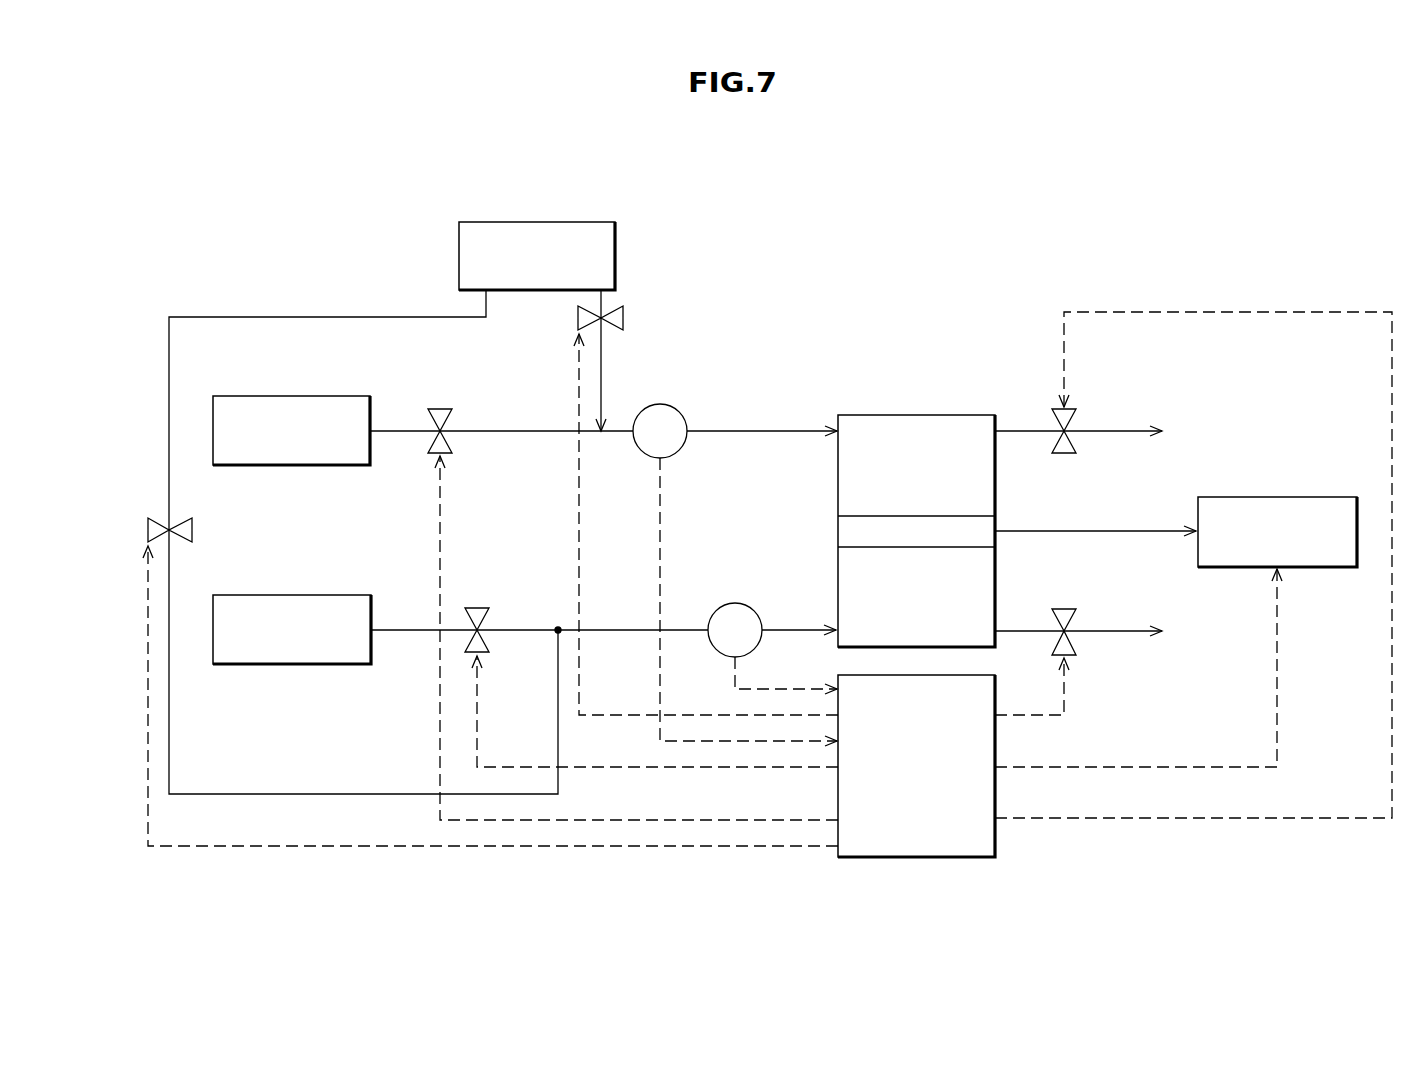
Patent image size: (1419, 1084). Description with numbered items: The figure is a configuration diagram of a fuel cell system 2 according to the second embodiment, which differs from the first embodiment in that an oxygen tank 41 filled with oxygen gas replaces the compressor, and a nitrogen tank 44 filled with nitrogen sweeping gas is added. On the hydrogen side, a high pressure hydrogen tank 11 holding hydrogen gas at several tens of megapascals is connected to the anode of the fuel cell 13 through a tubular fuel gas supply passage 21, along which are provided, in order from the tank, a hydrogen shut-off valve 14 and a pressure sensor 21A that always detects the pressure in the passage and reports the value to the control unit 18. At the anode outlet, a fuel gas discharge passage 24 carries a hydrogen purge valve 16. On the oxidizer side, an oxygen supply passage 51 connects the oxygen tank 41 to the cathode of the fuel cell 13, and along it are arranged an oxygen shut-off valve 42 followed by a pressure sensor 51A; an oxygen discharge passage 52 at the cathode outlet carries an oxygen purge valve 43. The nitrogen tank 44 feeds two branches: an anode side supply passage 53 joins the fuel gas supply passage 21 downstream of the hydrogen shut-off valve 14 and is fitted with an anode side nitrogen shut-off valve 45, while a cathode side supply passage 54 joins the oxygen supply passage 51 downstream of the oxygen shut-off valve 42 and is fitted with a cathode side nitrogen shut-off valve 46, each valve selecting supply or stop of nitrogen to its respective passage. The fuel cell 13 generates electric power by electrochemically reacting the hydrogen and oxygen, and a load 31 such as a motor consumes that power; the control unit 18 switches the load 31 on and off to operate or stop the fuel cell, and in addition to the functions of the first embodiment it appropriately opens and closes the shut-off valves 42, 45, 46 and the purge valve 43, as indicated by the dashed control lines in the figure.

The fuel cell system 2 is at (912, 303).
The high pressure hydrogen tank 11 is at (238, 395).
The fuel cell 13 is at (918, 411).
The shut-off valve 14 is at (437, 408).
The purge valve 16 is at (1073, 408).
The control unit 18 is at (957, 858).
The fuel gas supply passage 21 is at (527, 431).
The pressure sensor 21A is at (675, 408).
The fuel gas discharge passage 24 is at (1020, 431).
The load 31 is at (1327, 568).
The oxygen tank 41 is at (264, 594).
The shut-off valve 42 is at (473, 607).
The purge valve 43 is at (1072, 658).
The nitrogen tank 44 is at (616, 258).
The shut-off valve 45 is at (622, 318).
The shut-off valve 46 is at (152, 520).
The oxygen supply passage 51 is at (613, 630).
The pressure sensor 51A is at (745, 606).
The oxygen discharge passage 52 is at (1106, 633).
The anode side supply passage 53 is at (601, 358).
The cathode side supply passage 54 is at (226, 317).